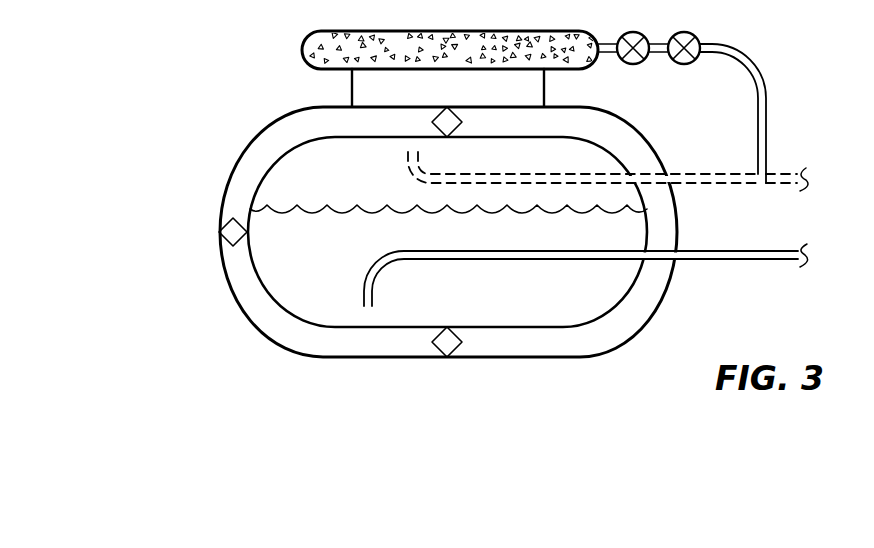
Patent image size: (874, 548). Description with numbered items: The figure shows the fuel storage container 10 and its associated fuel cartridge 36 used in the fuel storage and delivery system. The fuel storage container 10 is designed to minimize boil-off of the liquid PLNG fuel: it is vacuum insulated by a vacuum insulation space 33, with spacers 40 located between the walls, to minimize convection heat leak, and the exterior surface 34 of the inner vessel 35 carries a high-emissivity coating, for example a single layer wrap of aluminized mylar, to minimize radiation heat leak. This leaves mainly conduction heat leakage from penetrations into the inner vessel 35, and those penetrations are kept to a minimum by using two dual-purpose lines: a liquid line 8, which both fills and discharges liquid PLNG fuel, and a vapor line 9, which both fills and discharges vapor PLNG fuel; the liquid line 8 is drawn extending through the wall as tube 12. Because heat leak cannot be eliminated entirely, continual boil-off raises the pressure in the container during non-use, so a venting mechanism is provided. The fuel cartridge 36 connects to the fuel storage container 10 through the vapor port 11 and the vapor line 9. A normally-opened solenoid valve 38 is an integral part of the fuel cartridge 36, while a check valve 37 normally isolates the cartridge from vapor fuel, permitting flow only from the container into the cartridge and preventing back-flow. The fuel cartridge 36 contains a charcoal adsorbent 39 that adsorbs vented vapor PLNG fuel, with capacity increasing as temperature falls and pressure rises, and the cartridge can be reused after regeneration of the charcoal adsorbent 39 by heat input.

The fuel storage container 10 is at (230, 114).
The vacuum insulation space 33 is at (244, 288).
The exterior surface 34 is at (597, 318).
The inner vessel 35 is at (612, 290).
The spacer 40 is at (221, 222).
The fuel cartridge 36 is at (377, 30).
The charcoal adsorbent 39 is at (507, 38).
The normally-opened solenoid valve 38 is at (634, 31).
The check valve 37 is at (685, 31).
The vapor port 11 is at (670, 178).
The vapor line 9 is at (783, 173).
The outlet tube 12 is at (673, 255).
The liquid line 8 is at (761, 250).